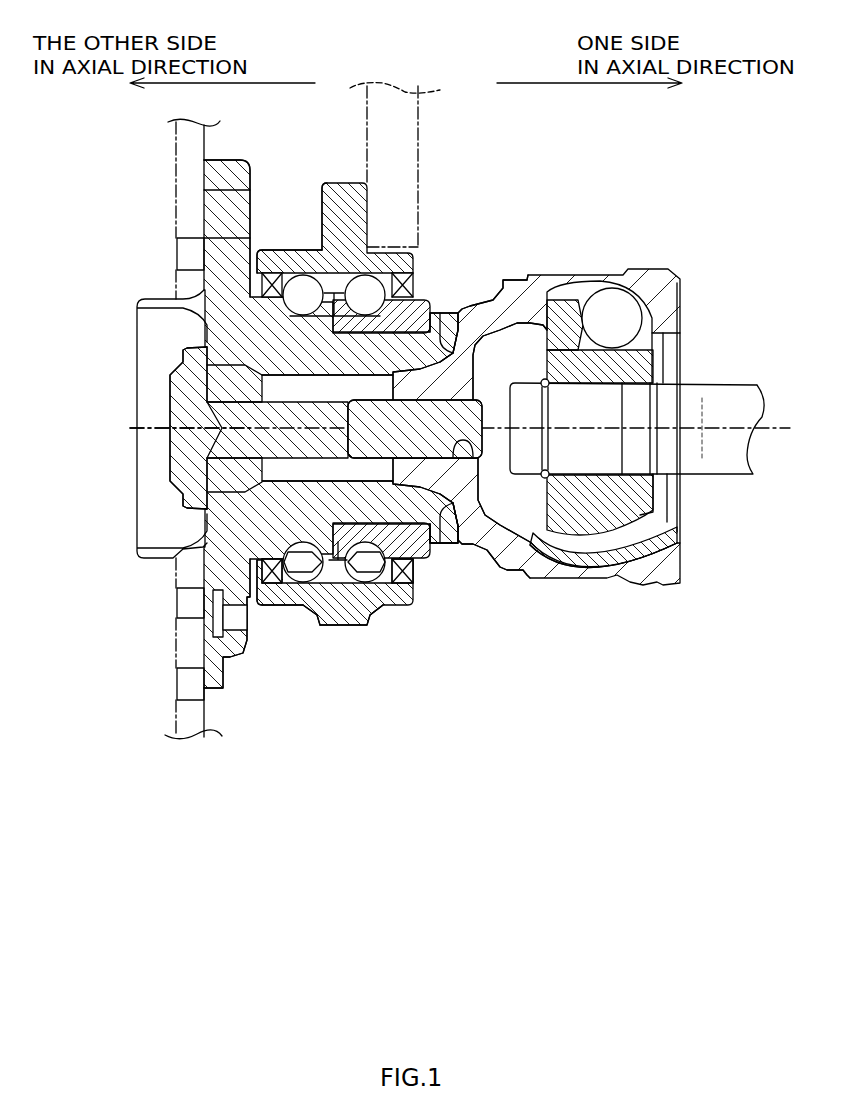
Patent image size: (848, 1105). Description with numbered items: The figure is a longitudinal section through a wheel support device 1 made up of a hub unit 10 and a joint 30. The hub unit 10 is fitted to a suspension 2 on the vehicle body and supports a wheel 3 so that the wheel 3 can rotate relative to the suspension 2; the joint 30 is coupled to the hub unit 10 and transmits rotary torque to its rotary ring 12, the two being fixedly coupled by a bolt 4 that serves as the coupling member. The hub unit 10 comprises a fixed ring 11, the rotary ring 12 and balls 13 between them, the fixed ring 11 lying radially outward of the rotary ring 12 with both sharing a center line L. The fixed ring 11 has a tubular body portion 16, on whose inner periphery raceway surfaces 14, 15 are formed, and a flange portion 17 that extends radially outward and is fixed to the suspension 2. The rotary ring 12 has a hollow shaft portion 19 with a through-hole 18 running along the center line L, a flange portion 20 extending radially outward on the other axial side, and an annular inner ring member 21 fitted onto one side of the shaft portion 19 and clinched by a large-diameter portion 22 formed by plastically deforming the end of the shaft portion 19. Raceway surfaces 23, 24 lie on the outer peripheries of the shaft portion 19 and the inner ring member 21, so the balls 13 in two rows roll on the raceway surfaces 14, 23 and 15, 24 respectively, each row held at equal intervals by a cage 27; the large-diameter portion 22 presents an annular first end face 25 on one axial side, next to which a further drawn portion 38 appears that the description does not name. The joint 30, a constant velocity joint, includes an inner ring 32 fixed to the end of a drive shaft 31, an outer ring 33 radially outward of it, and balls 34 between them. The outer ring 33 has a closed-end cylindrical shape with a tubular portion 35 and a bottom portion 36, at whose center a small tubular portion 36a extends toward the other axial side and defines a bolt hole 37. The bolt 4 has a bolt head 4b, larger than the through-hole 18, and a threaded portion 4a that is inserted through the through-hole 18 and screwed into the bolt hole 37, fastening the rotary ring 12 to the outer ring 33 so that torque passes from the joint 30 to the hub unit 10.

The wheel support device 1 is at (514, 211).
The suspension 2 is at (420, 137).
The wheel 3 is at (190, 155).
The bolt 4 is at (170, 383).
The threaded portion 4a is at (450, 403).
The bolt head 4b is at (183, 357).
The center line L is at (157, 445).
The hub unit 10 is at (359, 223).
The fixed ring 11 is at (315, 257).
The rotary ring 12 is at (207, 297).
The balls 13 is at (350, 597).
The raceway surface 14 is at (297, 587).
The raceway surface 15 is at (353, 613).
The body portion 16 is at (280, 263).
The flange portion 17 is at (347, 183).
The through-hole 18 is at (250, 458).
The shaft portion 19 is at (203, 567).
The flange portion 20 is at (233, 158).
The inner ring member 21 is at (424, 558).
The large-diameter portion 22 is at (446, 533).
The raceway surface 23 is at (290, 580).
The raceway surface 24 is at (422, 560).
The first end face 25 is at (466, 328).
The cage 27 is at (337, 613).
The joint 30 is at (600, 427).
The drive shaft 31 is at (673, 407).
The inner ring 32 is at (623, 560).
The outer ring 33 is at (590, 575).
The balls 34 is at (613, 300).
The tubular portion 35 is at (578, 283).
The bottom portion 36 is at (493, 550).
The small tubular portion 36a is at (383, 378).
The bolt hole 37 is at (523, 567).
The caulked portion 38 is at (444, 311).